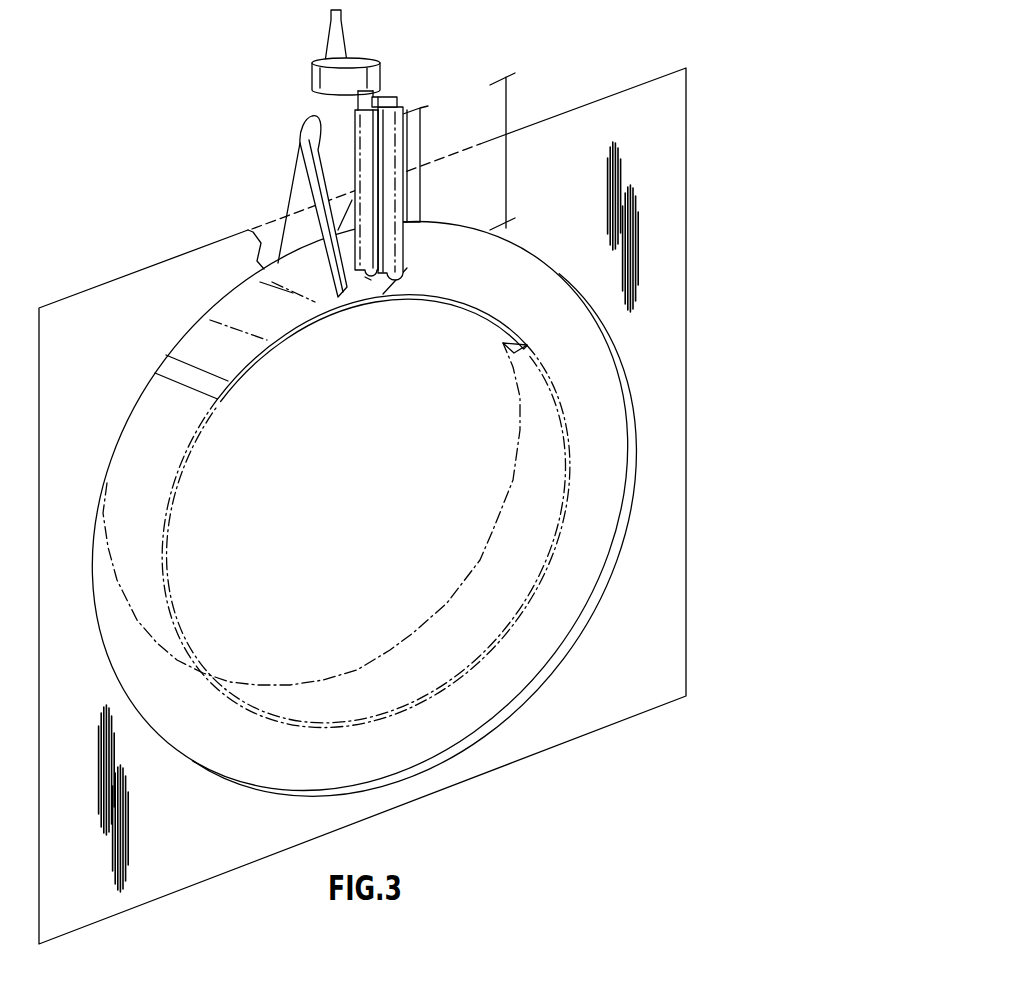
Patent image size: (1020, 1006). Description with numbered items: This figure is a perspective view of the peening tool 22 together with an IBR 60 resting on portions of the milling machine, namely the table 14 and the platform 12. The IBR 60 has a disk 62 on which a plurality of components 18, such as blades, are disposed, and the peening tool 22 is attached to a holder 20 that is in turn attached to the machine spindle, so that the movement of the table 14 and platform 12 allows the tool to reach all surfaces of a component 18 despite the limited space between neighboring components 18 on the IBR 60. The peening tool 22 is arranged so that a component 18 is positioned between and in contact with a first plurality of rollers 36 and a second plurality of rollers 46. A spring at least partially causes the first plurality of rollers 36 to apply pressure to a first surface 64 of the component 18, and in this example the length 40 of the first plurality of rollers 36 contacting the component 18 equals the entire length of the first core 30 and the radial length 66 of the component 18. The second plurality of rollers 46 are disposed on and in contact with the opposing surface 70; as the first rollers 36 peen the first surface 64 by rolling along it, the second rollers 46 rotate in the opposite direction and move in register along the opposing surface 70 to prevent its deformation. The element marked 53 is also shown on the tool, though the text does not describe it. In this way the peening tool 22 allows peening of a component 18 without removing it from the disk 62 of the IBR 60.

The platform 12 is at (686, 395).
The table 14 is at (582, 637).
The component 18 is at (297, 233).
The holder 20 is at (322, 62).
The peening tool 22 is at (446, 113).
The first core 30 is at (367, 255).
The first plurality of rollers 36 is at (358, 157).
The length 40 is at (420, 147).
The second plurality of rollers 46 is at (392, 160).
The fastener 53 is at (387, 93).
The IBR 60 is at (222, 348).
The disk 62 is at (473, 291).
The first surface 64 is at (330, 180).
The radial length 66 is at (506, 168).
The opposing surface 70 is at (378, 173).